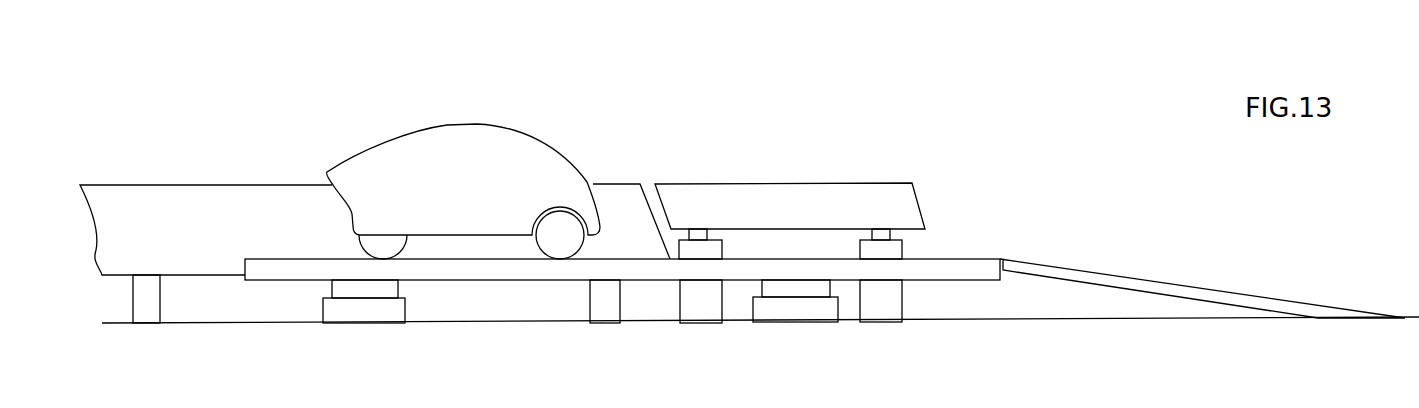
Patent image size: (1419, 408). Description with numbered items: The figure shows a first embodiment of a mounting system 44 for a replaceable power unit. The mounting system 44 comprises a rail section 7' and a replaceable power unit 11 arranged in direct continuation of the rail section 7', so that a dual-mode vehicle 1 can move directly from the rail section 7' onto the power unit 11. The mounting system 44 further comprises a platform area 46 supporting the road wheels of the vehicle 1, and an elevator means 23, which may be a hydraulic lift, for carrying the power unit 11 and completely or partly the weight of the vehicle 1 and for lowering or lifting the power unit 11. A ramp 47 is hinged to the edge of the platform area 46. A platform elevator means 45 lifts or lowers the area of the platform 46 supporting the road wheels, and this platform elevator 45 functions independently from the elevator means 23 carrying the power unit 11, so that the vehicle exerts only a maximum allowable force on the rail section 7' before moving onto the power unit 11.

The mounting system 44 is at (702, 115).
The dual-mode vehicle 1 is at (454, 158).
The replaceable power unit 11 is at (786, 199).
The rail section 7' is at (375, 253).
The platform area 46 is at (958, 248).
The ramp 47 is at (1093, 270).
The elevator means 23 is at (700, 327).
The platform elevator means 45 is at (375, 327).